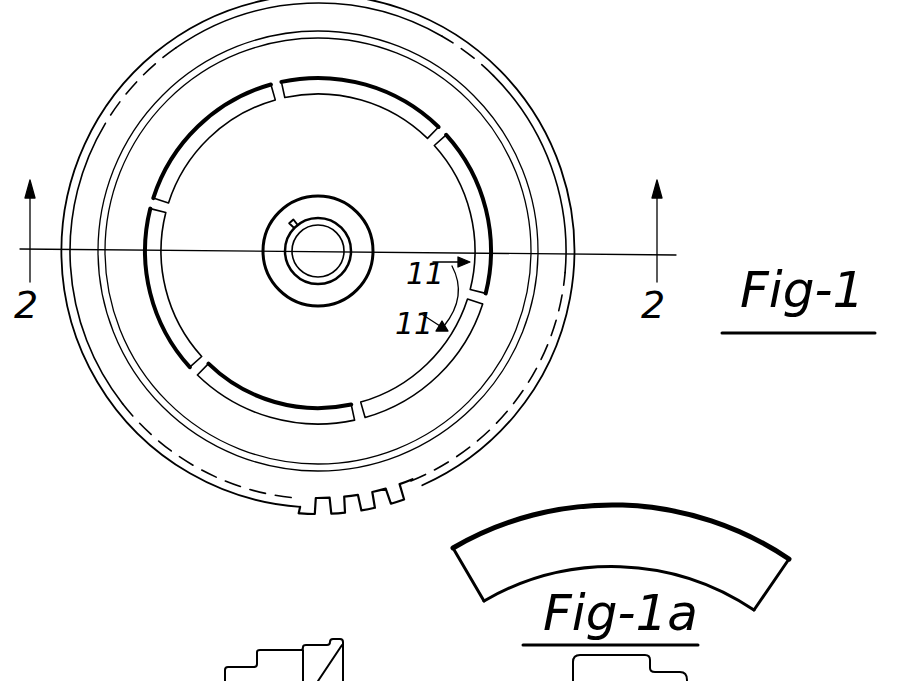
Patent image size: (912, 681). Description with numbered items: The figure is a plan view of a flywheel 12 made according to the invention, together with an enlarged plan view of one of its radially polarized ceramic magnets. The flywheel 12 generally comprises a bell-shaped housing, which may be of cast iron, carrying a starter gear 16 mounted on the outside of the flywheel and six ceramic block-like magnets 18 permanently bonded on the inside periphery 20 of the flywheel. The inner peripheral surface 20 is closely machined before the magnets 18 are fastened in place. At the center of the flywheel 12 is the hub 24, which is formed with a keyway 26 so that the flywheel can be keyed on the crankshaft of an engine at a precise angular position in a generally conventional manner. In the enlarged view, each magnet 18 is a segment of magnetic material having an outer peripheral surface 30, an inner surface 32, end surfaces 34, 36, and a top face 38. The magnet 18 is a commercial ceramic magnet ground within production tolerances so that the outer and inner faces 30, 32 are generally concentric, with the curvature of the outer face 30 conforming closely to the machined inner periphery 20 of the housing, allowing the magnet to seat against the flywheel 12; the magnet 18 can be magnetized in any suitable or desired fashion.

In FIG. 1, the flywheel 12 is at (586, 336).
In FIG. 1, the starter gear 16 is at (462, 469).
In FIG. 1, the ceramic block-like magnet 18 is at (425, 382).
In FIG. 1A, the ceramic block-like magnet 18 is at (623, 562).
In FIG. 1, the inside periphery 20 is at (468, 329).
In FIG. 1, the hub 24 is at (358, 233).
In FIG. 1, the keyway 26 is at (297, 226).
In FIG. 1A, the outer peripheral surface 30 is at (618, 505).
In FIG. 1A, the inner surface 32 is at (708, 590).
In FIG. 1A, the end surface 34 is at (773, 592).
In FIG. 1A, the end surface 36 is at (463, 577).
In FIG. 1A, the top face 38 is at (735, 548).